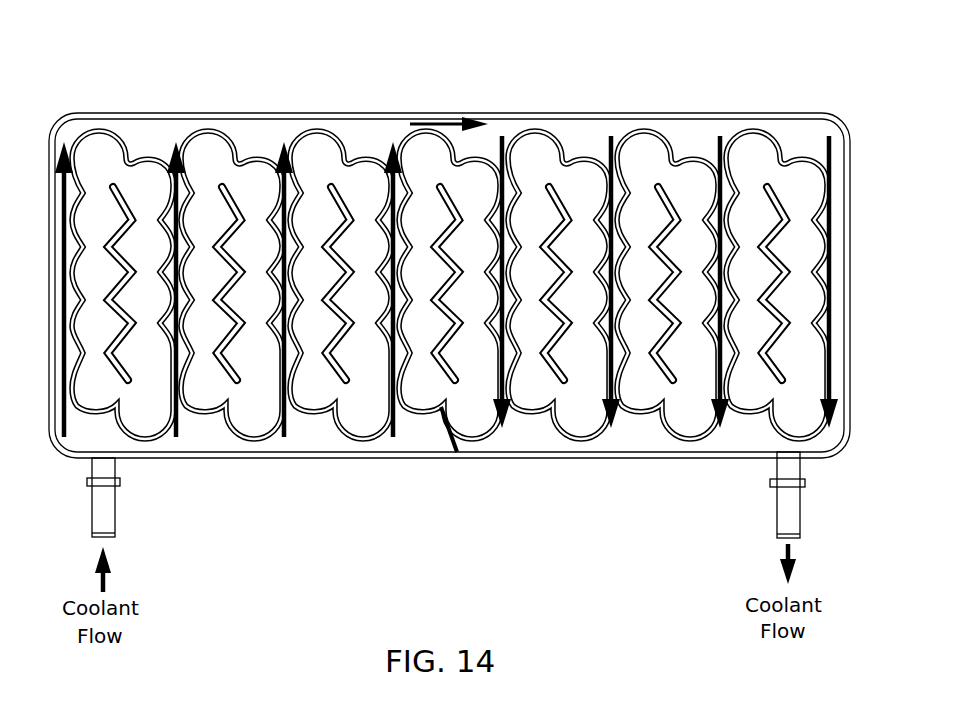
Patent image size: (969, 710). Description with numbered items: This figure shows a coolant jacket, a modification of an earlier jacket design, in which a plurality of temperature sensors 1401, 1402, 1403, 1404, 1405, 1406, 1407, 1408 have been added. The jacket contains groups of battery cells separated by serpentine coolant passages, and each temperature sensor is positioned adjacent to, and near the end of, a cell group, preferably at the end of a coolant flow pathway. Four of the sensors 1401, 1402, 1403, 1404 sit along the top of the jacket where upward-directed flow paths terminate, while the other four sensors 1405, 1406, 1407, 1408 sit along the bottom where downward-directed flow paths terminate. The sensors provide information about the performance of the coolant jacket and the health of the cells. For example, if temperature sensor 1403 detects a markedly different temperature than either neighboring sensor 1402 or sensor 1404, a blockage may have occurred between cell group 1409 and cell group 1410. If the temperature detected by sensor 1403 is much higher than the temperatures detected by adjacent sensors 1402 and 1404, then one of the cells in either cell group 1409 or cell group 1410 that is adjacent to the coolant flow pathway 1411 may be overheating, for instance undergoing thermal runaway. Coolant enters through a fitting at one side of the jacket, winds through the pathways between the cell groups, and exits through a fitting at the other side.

The temperature sensor 1401 is at (74, 124).
The temperature sensor 1402 is at (178, 124).
The temperature sensor 1403 is at (283, 122).
The temperature sensor 1404 is at (392, 122).
The temperature sensor 1405 is at (503, 448).
The temperature sensor 1406 is at (612, 446).
The temperature sensor 1407 is at (719, 447).
The temperature sensor 1408 is at (826, 447).
The cell group 1409 is at (227, 404).
The cell group 1410 is at (366, 403).
The coolant flow pathway 1411 is at (298, 406).